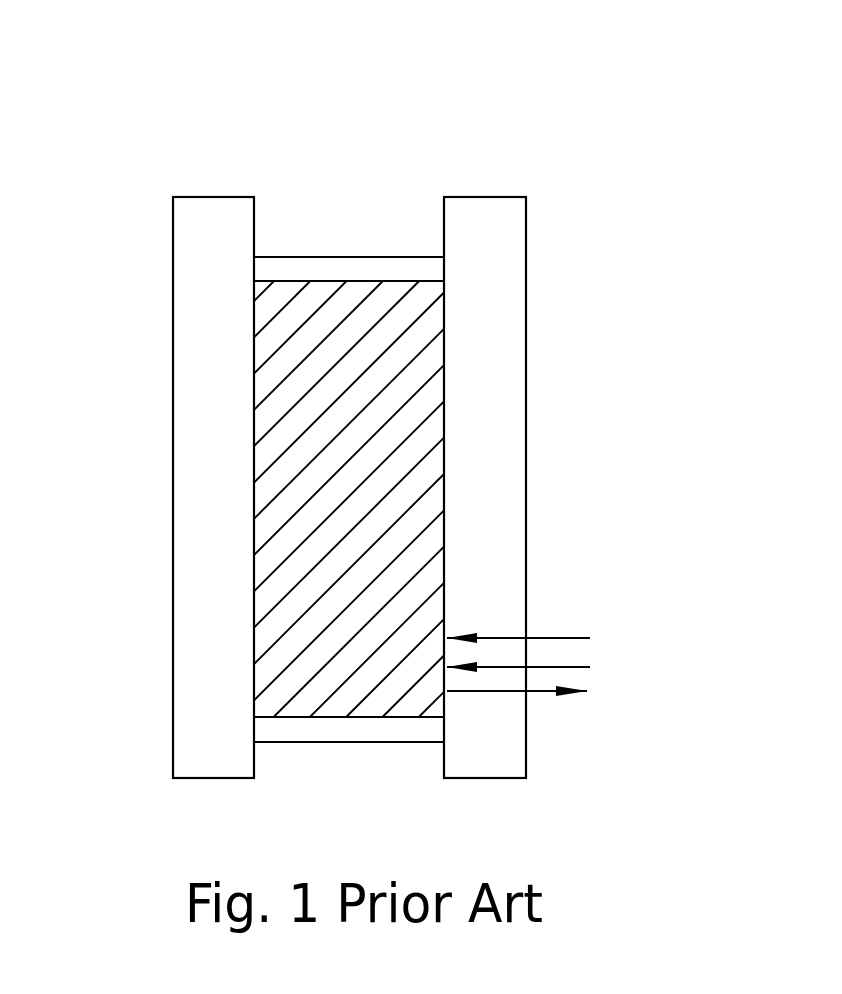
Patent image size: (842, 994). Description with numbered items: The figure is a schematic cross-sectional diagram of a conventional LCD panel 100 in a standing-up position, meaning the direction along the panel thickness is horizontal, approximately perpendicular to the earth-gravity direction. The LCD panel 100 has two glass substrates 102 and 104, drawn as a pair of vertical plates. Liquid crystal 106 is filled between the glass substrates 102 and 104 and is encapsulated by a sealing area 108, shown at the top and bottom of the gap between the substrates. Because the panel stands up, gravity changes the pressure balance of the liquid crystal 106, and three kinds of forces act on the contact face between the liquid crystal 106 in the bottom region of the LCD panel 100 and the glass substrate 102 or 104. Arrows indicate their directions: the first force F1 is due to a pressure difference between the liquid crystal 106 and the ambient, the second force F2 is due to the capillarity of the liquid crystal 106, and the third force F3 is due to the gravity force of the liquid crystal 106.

The LCD panel 100 is at (668, 165).
The glass substrate 102 is at (213, 214).
The glass substrate 104 is at (493, 215).
The liquid crystal 106 is at (283, 385).
The sealing area 108 is at (350, 270).
The first force F1 is at (543, 632).
The second force F2 is at (543, 662).
The third force F3 is at (543, 697).